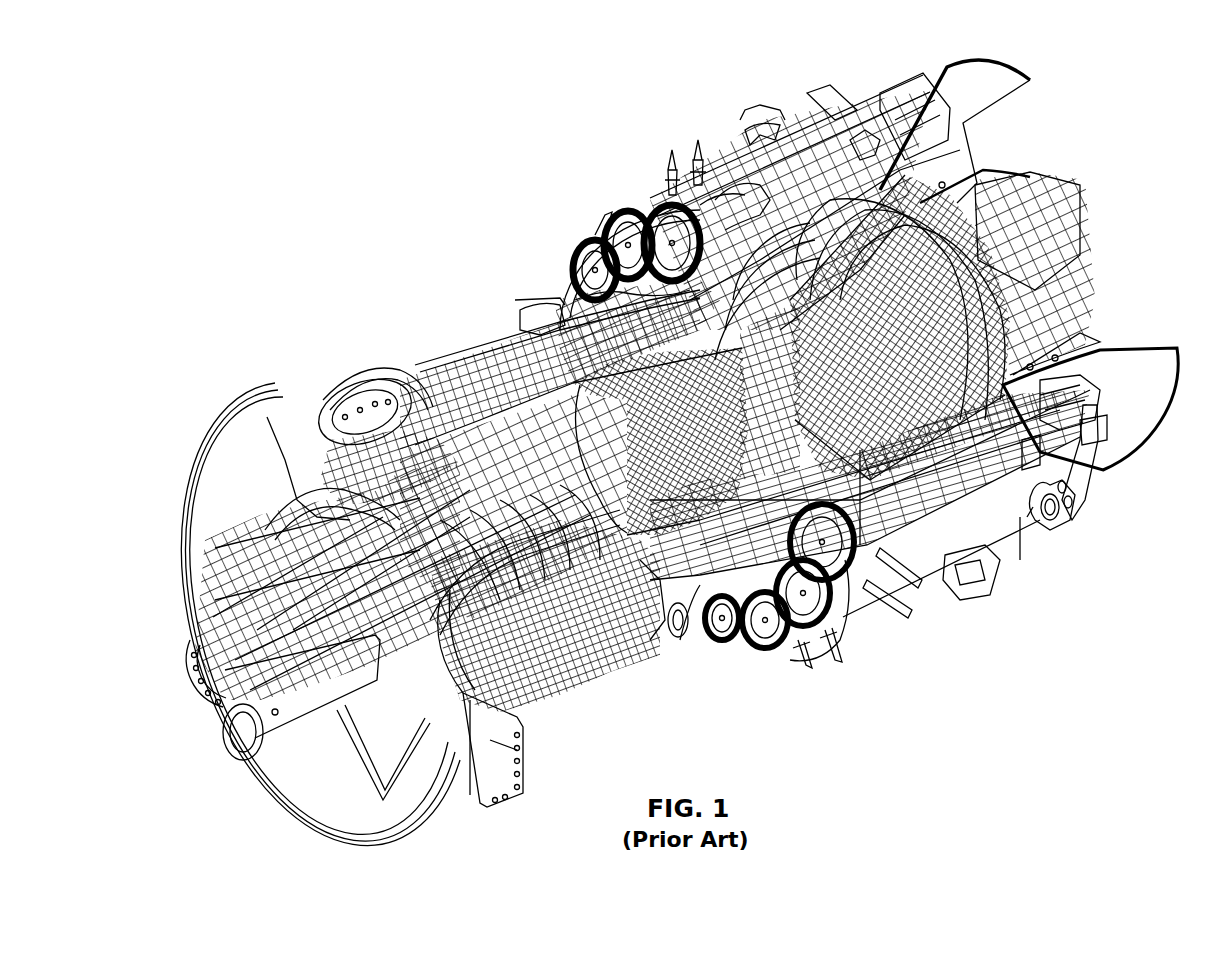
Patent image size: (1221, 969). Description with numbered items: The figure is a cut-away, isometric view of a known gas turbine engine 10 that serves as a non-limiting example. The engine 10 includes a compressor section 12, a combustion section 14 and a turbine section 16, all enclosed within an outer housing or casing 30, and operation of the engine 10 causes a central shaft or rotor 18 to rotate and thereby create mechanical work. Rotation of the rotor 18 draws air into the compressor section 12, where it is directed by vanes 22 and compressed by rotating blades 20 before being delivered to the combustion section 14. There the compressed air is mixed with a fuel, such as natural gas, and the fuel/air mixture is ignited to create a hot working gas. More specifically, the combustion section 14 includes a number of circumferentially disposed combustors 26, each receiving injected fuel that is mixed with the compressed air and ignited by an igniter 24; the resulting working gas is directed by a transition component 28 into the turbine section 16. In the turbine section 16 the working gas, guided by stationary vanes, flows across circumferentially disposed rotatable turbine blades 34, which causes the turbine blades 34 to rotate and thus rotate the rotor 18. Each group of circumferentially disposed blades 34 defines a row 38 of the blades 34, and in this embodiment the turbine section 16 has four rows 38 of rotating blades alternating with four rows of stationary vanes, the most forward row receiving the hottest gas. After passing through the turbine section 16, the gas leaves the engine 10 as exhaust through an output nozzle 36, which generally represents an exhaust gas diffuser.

The gas turbine engine 10 is at (378, 165).
The compressor section 12 is at (335, 368).
The combustion section 14 is at (580, 234).
The turbine section 16 is at (845, 70).
The central shaft or rotor 18 is at (455, 350).
The rotating blades 20 is at (377, 390).
The vanes 22 is at (410, 378).
The igniter 24 is at (663, 178).
The combustors 26 is at (773, 628).
The transition component 28 is at (765, 275).
The outer housing or casing 30 is at (810, 145).
The turbine blades 34 is at (990, 455).
The output nozzle 36 is at (963, 160).
The row of the blades 38 is at (1013, 375).